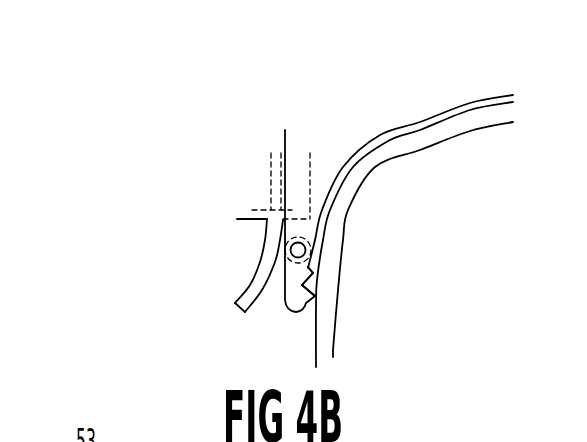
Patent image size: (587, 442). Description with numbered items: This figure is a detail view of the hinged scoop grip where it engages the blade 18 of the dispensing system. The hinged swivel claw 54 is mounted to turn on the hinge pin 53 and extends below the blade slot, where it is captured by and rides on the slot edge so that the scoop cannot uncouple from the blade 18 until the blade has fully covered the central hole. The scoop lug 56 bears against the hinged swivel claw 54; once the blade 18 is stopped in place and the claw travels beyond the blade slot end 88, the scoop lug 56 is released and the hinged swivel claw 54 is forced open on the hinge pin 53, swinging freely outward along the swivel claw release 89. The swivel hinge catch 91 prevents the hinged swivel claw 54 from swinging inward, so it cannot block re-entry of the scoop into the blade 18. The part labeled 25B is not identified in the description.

The blade 18 is at (343, 104).
The tire 25B is at (480, 133).
The hinge pin 53 is at (298, 250).
The hinged swivel claw 54 is at (312, 296).
The scoop lug 56 is at (312, 287).
The blade slot end 88 is at (292, 210).
The swivel claw release 89 is at (240, 292).
The swivel hinge catch 91 is at (312, 268).